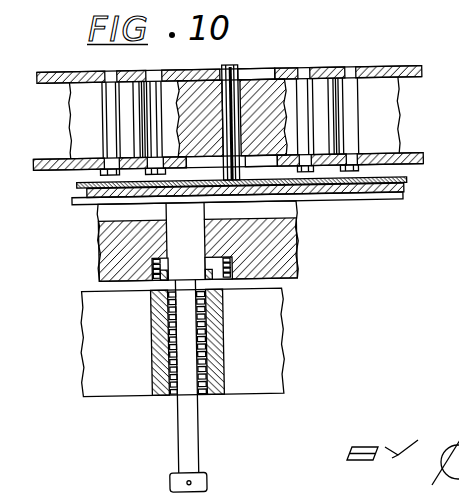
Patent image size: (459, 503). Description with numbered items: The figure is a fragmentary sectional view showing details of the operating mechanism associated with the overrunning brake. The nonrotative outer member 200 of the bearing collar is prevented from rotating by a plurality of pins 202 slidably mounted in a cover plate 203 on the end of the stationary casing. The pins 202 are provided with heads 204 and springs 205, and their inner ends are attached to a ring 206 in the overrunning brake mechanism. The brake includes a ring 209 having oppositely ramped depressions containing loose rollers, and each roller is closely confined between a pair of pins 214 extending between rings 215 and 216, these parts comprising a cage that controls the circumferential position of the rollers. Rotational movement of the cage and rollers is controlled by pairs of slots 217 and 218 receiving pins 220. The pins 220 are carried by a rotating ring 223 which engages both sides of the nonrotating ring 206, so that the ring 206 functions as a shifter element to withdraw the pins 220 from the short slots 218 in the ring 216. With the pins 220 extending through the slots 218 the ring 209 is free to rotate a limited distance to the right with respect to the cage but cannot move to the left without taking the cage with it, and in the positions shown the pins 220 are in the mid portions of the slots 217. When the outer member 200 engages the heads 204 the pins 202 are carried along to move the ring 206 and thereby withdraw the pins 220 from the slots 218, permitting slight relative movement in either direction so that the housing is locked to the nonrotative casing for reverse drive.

The outer member 200 is at (161, 342).
The pins 202 is at (167, 377).
The cover plate 203 is at (238, 237).
The heads 204 is at (168, 481).
The springs 205 is at (168, 342).
The ring 206 is at (246, 210).
The ring 209 is at (249, 101).
The pins 214 is at (215, 118).
The ring 215 is at (211, 160).
The ring 216 is at (220, 65).
The slots 217 is at (291, 189).
The slots 218 is at (260, 60).
The pins 220 is at (212, 115).
The rotating ring 223 is at (257, 197).